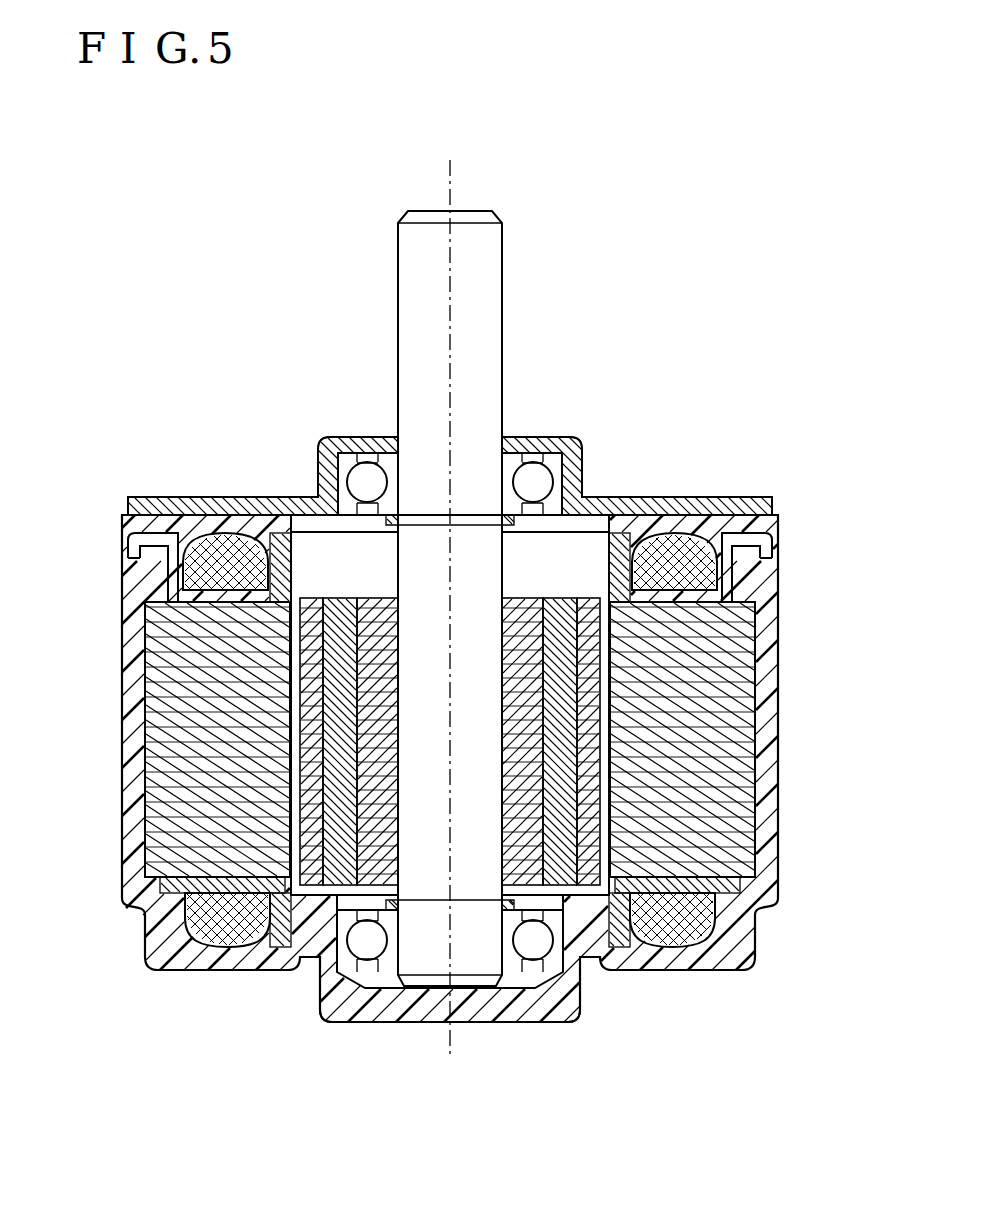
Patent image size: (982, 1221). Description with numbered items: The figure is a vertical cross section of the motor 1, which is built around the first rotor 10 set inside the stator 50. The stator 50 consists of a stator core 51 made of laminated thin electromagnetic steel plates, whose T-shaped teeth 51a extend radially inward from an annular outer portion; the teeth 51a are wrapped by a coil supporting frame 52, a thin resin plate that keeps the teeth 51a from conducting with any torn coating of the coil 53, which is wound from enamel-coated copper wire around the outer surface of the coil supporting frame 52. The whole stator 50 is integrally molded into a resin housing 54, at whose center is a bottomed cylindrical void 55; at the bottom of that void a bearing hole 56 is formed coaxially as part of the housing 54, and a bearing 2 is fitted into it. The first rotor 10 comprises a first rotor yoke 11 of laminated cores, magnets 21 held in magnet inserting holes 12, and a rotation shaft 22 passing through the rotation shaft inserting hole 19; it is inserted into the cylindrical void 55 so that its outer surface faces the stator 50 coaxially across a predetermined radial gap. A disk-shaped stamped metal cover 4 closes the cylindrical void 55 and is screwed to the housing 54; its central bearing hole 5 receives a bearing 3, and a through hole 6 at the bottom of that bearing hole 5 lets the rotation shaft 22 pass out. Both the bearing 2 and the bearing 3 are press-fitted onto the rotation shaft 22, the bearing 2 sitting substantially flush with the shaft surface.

The motor 1 is at (145, 250).
The bearing 2 is at (369, 960).
The bearing 3 is at (530, 467).
The cover 4 is at (606, 500).
The bearing hole 5 is at (352, 446).
The through hole 6 is at (355, 447).
The first rotor 10 is at (602, 836).
The first rotor yoke 11 is at (567, 782).
The magnet inserting hole 12 is at (331, 620).
The rotation shaft inserting hole 19 is at (403, 628).
The magnet 21 is at (323, 780).
The rotation shaft 22 is at (494, 294).
The stator 50 is at (440, 760).
The stator core 51 is at (136, 664).
The teeth 51a is at (160, 707).
The coil supporting frame 52 is at (150, 502).
The coil 53 is at (682, 533).
The housing 54 is at (128, 800).
The cylindrical void 55 is at (305, 572).
The bearing hole 56 is at (535, 942).